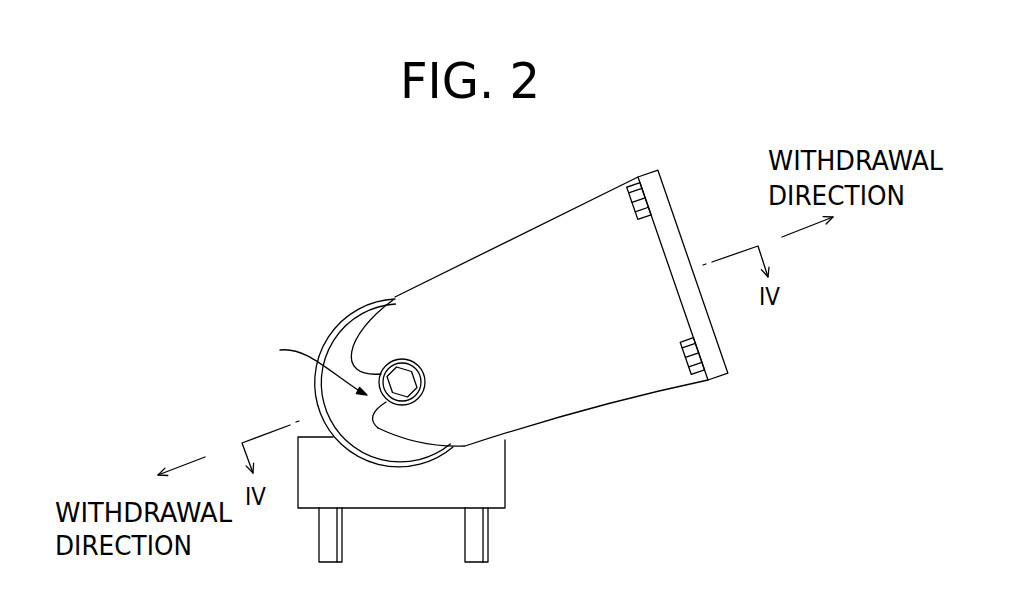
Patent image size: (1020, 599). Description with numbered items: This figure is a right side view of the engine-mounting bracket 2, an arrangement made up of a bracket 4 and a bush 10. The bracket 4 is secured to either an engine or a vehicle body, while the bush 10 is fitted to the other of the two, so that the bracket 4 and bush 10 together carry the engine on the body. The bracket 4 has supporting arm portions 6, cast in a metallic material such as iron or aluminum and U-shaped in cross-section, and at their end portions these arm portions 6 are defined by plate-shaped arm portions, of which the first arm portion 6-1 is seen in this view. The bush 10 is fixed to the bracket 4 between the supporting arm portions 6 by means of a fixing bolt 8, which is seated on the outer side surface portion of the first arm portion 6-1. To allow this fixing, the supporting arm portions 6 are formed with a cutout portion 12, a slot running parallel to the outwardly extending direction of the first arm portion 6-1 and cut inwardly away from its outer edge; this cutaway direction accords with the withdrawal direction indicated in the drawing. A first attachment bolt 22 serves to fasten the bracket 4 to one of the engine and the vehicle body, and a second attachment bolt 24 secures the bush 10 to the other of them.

The engine-mounting bracket 2 is at (688, 156).
The bracket 4 is at (683, 205).
The supporting arm portions 6 is at (495, 278).
The first arm portion 6-1 is at (428, 290).
The fixing bolt 8 is at (406, 383).
The bush 10 is at (352, 332).
The cutout portion 12 is at (309, 365).
The first attachment bolt 22 is at (637, 183).
The second attachment bolt 24 is at (478, 527).